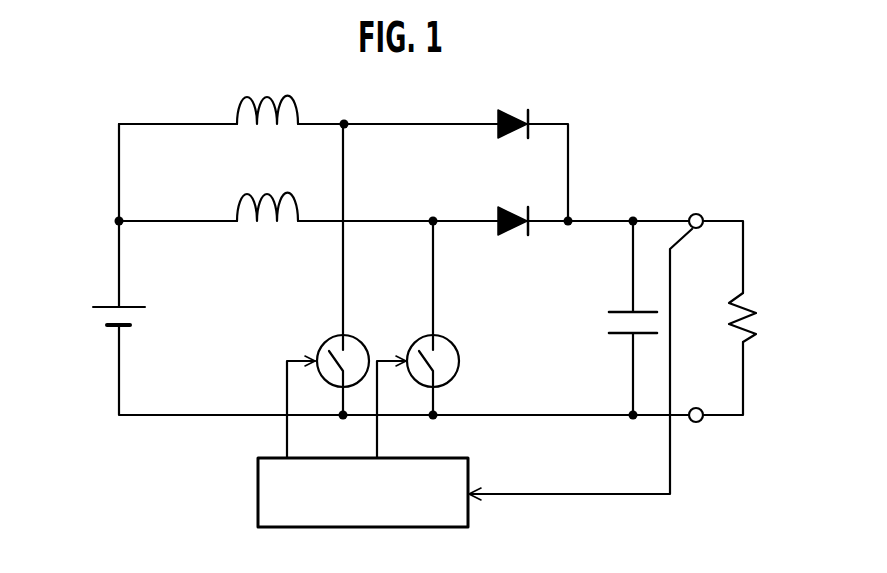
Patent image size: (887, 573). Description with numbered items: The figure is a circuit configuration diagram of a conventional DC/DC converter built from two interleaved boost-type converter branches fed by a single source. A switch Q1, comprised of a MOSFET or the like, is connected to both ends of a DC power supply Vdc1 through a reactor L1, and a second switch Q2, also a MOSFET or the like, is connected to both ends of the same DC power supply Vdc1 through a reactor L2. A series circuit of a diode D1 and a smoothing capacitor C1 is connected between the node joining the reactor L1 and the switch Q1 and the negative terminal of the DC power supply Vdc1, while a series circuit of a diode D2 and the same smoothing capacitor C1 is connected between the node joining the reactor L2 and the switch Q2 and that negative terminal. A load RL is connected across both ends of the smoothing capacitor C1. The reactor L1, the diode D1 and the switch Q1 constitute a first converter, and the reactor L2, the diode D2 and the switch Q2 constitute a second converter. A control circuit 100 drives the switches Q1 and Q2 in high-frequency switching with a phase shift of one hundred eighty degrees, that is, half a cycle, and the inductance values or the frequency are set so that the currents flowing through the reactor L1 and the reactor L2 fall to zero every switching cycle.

The reactor L1 is at (264, 96).
The reactor L2 is at (264, 192).
The diode D1 is at (513, 110).
The diode D2 is at (513, 206).
The DC power supply Vdc1 is at (93, 315).
The switch Q1 is at (328, 291).
The switch Q2 is at (418, 339).
The smoothing capacitor C1 is at (618, 318).
The load RL is at (755, 317).
The control circuit 100 is at (468, 508).